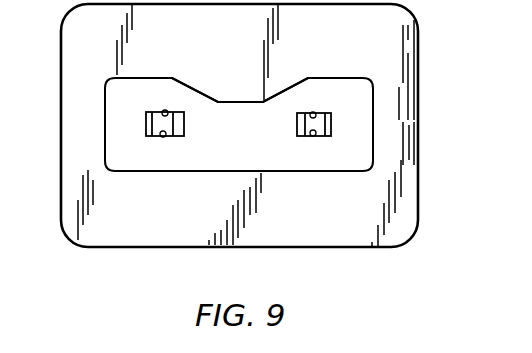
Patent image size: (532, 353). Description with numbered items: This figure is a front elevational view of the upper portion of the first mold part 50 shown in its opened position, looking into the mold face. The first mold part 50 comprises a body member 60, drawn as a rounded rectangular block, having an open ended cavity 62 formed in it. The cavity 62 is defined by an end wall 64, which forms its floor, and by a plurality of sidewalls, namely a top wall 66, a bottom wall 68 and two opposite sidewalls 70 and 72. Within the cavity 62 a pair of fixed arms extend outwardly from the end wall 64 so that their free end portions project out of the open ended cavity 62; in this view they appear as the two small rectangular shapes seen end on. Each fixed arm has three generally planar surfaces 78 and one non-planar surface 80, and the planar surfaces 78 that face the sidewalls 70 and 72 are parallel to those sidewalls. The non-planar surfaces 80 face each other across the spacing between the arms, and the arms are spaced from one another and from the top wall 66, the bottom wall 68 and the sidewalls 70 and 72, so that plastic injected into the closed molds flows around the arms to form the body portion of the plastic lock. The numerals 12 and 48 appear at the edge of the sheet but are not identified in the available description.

The first mold part 50 is at (118, 257).
The body member 60 is at (391, 241).
The open ended cavity 62 is at (130, 148).
The end wall 64 is at (281, 168).
The top wall 66 is at (196, 93).
The bottom wall 68 is at (135, 170).
The sidewall 70 is at (103, 127).
The sidewall 72 is at (376, 146).
The generally planar surfaces 78 is at (146, 125).
The non-planar surface 80 is at (296, 128).
The housing (partial label) 12 is at (10, 143).
The cover (partial label) 48 is at (11, 90).